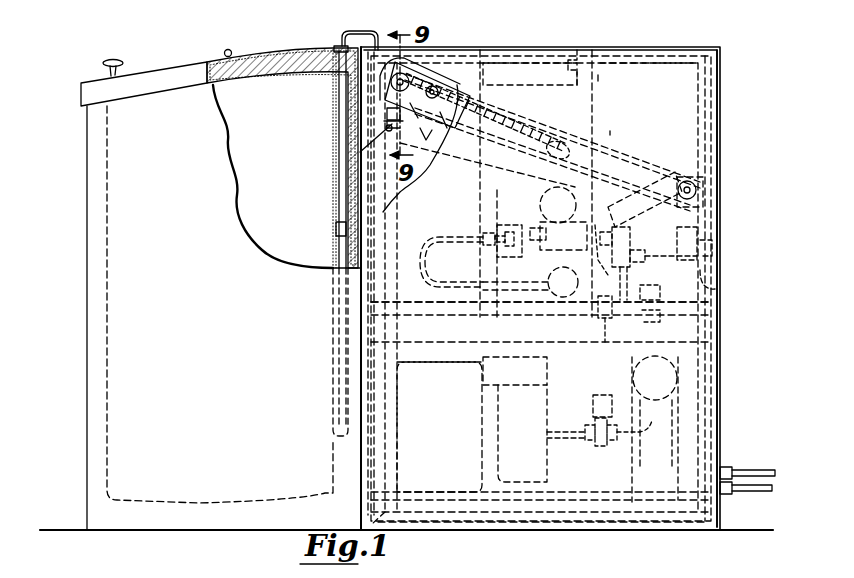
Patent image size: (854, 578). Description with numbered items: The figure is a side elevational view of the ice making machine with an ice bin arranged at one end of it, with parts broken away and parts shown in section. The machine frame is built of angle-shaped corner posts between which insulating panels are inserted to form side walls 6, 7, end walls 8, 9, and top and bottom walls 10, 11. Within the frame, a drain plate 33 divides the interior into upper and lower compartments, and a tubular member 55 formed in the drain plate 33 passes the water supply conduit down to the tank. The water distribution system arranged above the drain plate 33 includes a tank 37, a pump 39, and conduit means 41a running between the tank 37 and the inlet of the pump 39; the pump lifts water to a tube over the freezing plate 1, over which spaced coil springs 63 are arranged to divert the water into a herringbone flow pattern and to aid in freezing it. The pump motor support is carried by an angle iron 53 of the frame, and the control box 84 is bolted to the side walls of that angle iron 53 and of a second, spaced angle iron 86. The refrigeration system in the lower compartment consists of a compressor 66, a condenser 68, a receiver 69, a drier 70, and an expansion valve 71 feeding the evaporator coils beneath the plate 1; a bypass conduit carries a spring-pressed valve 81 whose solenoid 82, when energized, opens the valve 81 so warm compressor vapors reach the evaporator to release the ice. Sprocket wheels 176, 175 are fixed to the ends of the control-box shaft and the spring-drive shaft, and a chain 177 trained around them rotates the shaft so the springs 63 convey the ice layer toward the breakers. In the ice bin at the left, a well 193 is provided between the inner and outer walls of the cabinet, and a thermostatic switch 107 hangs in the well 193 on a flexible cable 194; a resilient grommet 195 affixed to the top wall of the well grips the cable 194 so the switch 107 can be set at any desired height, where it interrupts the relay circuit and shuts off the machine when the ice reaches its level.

The plate 1 is at (653, 188).
The side wall 6 is at (387, 190).
The side wall 7 is at (663, 128).
The end wall 8 is at (361, 468).
The end wall 9 is at (722, 133).
The top wall 10 is at (654, 50).
The bottom wall 11 is at (538, 531).
The drain plate 33 is at (541, 333).
The tank 37 is at (712, 255).
The pump 39 is at (606, 305).
The conduit means 41a is at (715, 289).
The angle iron 53 is at (578, 53).
The tubular member 55 is at (648, 312).
The coil springs 63 is at (620, 140).
The compressor 66 is at (468, 344).
The condenser 68 is at (545, 344).
The receiver 69 is at (636, 372).
The drier 70 is at (527, 257).
The expansion valve 71 is at (620, 188).
The spring-pressed valve 81 is at (607, 448).
The solenoid 82 is at (579, 416).
The box 84 is at (598, 80).
The angle iron 86 is at (503, 62).
The thermostatic switch 107 is at (340, 229).
The sprocket wheel 175 is at (380, 77).
The sprocket wheel 176 is at (553, 132).
The chain 177 is at (432, 148).
The well 193 is at (333, 121).
The flexible cable 194 is at (333, 189).
The grommet 195 is at (337, 49).